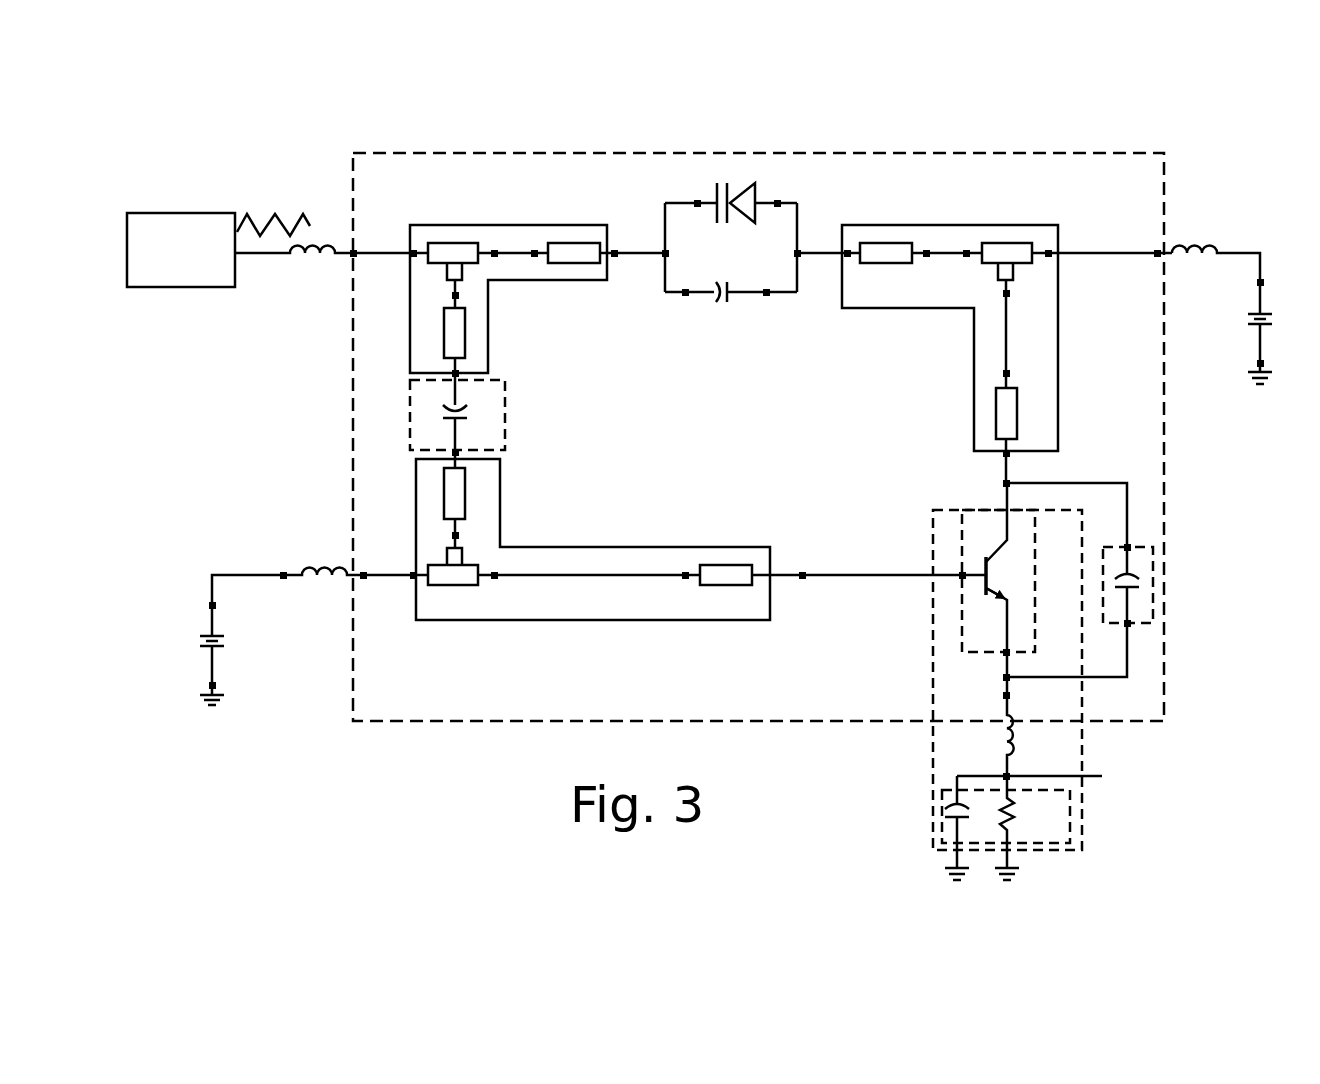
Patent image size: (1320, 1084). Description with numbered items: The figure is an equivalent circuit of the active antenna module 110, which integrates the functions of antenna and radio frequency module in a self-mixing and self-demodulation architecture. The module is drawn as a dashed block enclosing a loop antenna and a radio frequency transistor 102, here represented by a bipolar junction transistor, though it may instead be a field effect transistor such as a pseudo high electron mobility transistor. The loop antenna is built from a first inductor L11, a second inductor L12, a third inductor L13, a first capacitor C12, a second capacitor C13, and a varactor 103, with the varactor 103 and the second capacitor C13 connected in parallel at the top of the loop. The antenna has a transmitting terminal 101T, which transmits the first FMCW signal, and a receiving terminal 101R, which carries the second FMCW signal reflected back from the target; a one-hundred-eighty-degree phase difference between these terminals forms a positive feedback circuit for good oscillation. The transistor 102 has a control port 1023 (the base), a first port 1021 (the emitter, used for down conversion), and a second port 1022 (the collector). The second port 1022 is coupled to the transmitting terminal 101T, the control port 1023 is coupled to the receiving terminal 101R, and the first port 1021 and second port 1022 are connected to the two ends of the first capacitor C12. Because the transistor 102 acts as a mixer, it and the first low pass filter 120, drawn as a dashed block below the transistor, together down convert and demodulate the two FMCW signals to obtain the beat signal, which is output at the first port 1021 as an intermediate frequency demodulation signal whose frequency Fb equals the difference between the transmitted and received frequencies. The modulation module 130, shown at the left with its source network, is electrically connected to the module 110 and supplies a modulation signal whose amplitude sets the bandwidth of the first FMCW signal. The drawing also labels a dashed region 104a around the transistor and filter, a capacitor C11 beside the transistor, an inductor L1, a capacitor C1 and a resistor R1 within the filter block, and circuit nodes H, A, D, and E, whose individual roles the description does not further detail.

The active antenna module 110 is at (677, 153).
The modulation module 130 is at (186, 213).
The varactor 103 is at (757, 189).
The radio frequency transistor 102 is at (979, 574).
The first port 1021 is at (1006, 645).
The second port 1022 is at (1007, 512).
The control port 1023 is at (962, 574).
The feedback network 104a is at (933, 748).
The first low pass filter 120 is at (1073, 817).
The first inductor L11 is at (1057, 366).
The second inductor L12 is at (492, 315).
The third inductor L13 is at (416, 605).
The first capacitor C11 is at (1153, 571).
The first capacitor C12 is at (731, 311).
The second capacitor C13 is at (410, 419).
The inductor L1 is at (1029, 726).
The capacitor C1 is at (972, 828).
The resistor R1 is at (1023, 828).
The transmitting terminal 101T is at (977, 474).
The receiving terminal 101R is at (806, 591).
The node H is at (373, 233).
The node A is at (1142, 233).
The node D is at (374, 558).
The node E is at (985, 679).
The beat signal frequency Fb is at (1046, 777).